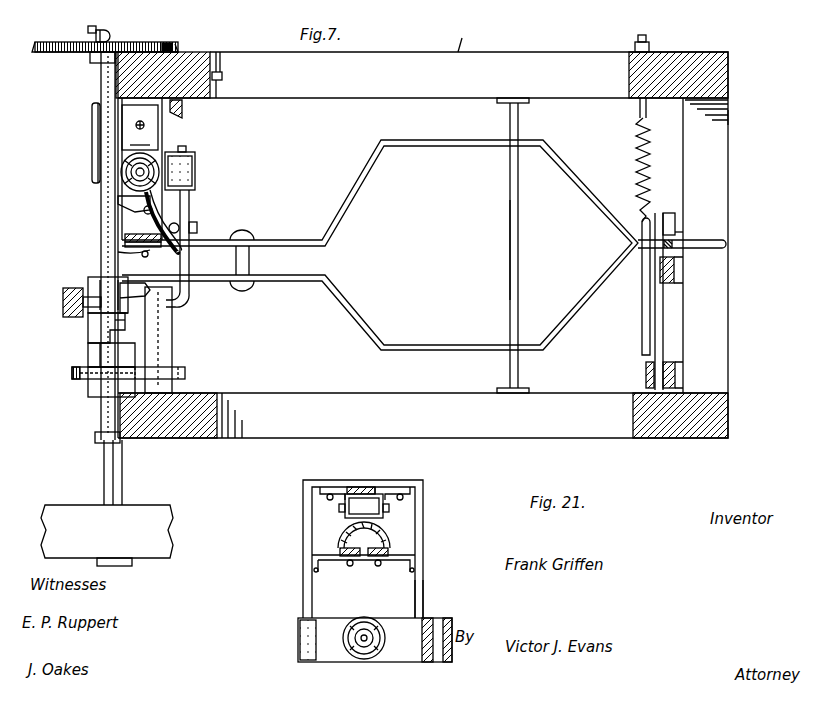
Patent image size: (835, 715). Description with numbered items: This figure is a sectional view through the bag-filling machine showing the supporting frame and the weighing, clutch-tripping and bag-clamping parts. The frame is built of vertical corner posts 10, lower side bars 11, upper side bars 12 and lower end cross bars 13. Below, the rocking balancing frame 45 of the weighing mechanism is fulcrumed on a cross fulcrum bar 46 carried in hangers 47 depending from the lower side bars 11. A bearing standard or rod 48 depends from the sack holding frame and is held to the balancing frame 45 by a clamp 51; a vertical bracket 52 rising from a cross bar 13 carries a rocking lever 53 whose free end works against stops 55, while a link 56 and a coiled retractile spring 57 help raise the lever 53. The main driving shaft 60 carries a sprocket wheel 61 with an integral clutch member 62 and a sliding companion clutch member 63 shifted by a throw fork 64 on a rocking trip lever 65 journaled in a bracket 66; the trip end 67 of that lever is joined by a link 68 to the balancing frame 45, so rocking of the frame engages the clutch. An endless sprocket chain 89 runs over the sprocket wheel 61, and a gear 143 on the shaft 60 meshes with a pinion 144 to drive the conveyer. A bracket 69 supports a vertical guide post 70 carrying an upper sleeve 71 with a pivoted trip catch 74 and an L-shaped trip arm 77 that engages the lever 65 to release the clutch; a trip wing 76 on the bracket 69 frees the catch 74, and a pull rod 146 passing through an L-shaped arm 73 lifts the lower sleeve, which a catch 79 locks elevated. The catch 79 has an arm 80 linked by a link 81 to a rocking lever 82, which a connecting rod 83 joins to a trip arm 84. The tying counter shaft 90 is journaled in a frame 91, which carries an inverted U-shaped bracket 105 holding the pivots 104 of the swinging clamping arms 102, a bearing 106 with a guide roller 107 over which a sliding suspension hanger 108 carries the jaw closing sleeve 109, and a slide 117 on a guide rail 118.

In FIG. 7, the vertical corner posts 10 is at (718, 78).
In FIG. 7, the lower side bars 11 is at (463, 37).
In FIG. 7, the upper side bars 12 is at (588, 28).
In FIG. 7, the lower end cross bars 13 is at (730, 119).
In FIG. 7, the rocking balancing frame 45 is at (365, 322).
In FIG. 7, the cross fulcrum bar 46 is at (509, 282).
In FIG. 7, the hangers 47 is at (505, 104).
In FIG. 7, the bearing standard or rod 48 is at (675, 258).
In FIG. 7, the clamp 51 is at (672, 220).
In FIG. 7, the vertical bracket 52 is at (686, 275).
In FIG. 7, the rocking lever 53 is at (666, 330).
In FIG. 7, the stops 55 is at (676, 375).
In FIG. 7, the link 56 is at (642, 312).
In FIG. 7, the coiled retractile spring 57 is at (636, 153).
In FIG. 7, the main driving shaft 60 is at (124, 486).
In FIG. 7, the sprocket wheel 61 is at (88, 383).
In FIG. 7, the clutch member 62 is at (90, 357).
In FIG. 7, the companion clutch member 63 is at (90, 327).
In FIG. 7, the throw fork 64 is at (88, 292).
In FIG. 7, the rocking trip lever 65 is at (190, 301).
In FIG. 7, the bracket 66 is at (62, 302).
In FIG. 7, the trip end 67 is at (190, 205).
In FIG. 7, the link 68 is at (203, 221).
In FIG. 7, the bracket 69 is at (124, 232).
In FIG. 7, the vertical guide post 70 is at (124, 164).
In FIG. 7, the upper sleeve 71 is at (150, 145).
In FIG. 7, the L-shaped arm 73 is at (128, 124).
In FIG. 7, the trip catch 74 is at (170, 210).
In FIG. 7, the trip wing 76 is at (118, 250).
In FIG. 7, the L-shaped trip arm 77 is at (196, 162).
In FIG. 7, the catch 79 is at (118, 200).
In FIG. 7, the arm 80 is at (96, 190).
In FIG. 7, the link 81 is at (90, 106).
In FIG. 7, the rocking lever 82 is at (100, 78).
In FIG. 7, the connecting rod 83 is at (86, 24).
In FIG. 7, the trip arm 84 is at (108, 26).
In FIG. 7, the endless sprocket chain 89 is at (188, 371).
In FIG. 21, the rotatable counter shaft 90 is at (370, 660).
In FIG. 21, the frame 91 is at (321, 660).
In FIG. 21, the swinging clamping arms 102 is at (340, 552).
In FIG. 21, the pivots 104 is at (388, 538).
In FIG. 21, the inverted U-shaped bracket 105 is at (302, 482).
In FIG. 21, the bearing 106 is at (388, 496).
In FIG. 21, the guide roller 107 is at (354, 506).
In FIG. 21, the sliding suspension hanger 108 is at (364, 484).
In FIG. 21, the jaw closing sleeve 109 is at (422, 505).
In FIG. 7, the slide 117 is at (224, 76).
In FIG. 21, the guide rail 118 is at (450, 616).
In FIG. 7, the gear 143 is at (163, 40).
In FIG. 7, the pinion 144 is at (182, 46).
In FIG. 7, the pull rod 146 is at (186, 108).